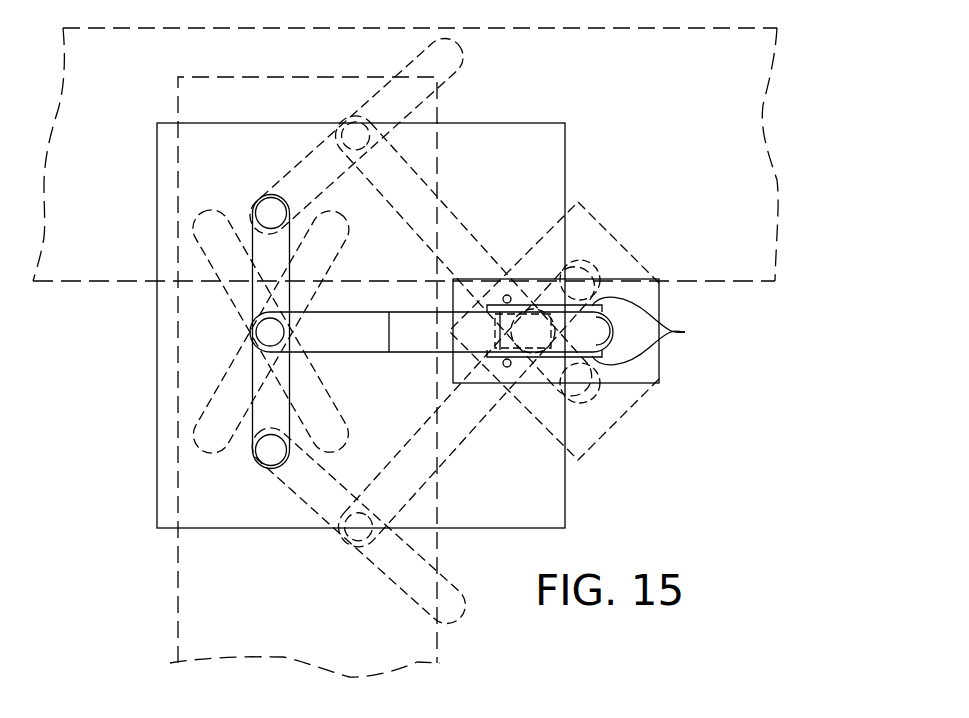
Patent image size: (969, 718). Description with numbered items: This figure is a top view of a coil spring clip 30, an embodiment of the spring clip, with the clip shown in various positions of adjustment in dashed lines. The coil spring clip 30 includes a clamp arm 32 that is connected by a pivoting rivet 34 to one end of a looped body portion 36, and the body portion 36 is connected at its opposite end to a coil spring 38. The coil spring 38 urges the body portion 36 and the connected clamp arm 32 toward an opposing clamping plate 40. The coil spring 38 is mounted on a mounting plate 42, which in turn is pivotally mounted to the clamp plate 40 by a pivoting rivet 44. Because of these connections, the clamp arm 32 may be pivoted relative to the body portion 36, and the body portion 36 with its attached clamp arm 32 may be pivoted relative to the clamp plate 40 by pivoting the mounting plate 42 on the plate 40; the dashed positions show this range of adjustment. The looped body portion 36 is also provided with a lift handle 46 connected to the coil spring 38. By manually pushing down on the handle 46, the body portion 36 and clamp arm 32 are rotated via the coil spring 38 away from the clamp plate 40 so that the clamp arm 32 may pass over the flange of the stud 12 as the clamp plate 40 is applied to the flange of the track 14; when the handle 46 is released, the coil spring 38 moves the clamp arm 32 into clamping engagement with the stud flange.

The stud 12 is at (164, 594).
The track 14 is at (74, 296).
The coil spring clip 30 is at (677, 206).
The clamp arm 32 is at (290, 168).
The pivoting rivet 34 is at (268, 334).
The looped body portion 36 is at (357, 322).
The coil spring 38 is at (485, 388).
The clamping plate 40 is at (163, 478).
The mounting plate 42 is at (587, 331).
The pivoting rivet 44 is at (597, 390).
The lift handle 46 is at (591, 325).